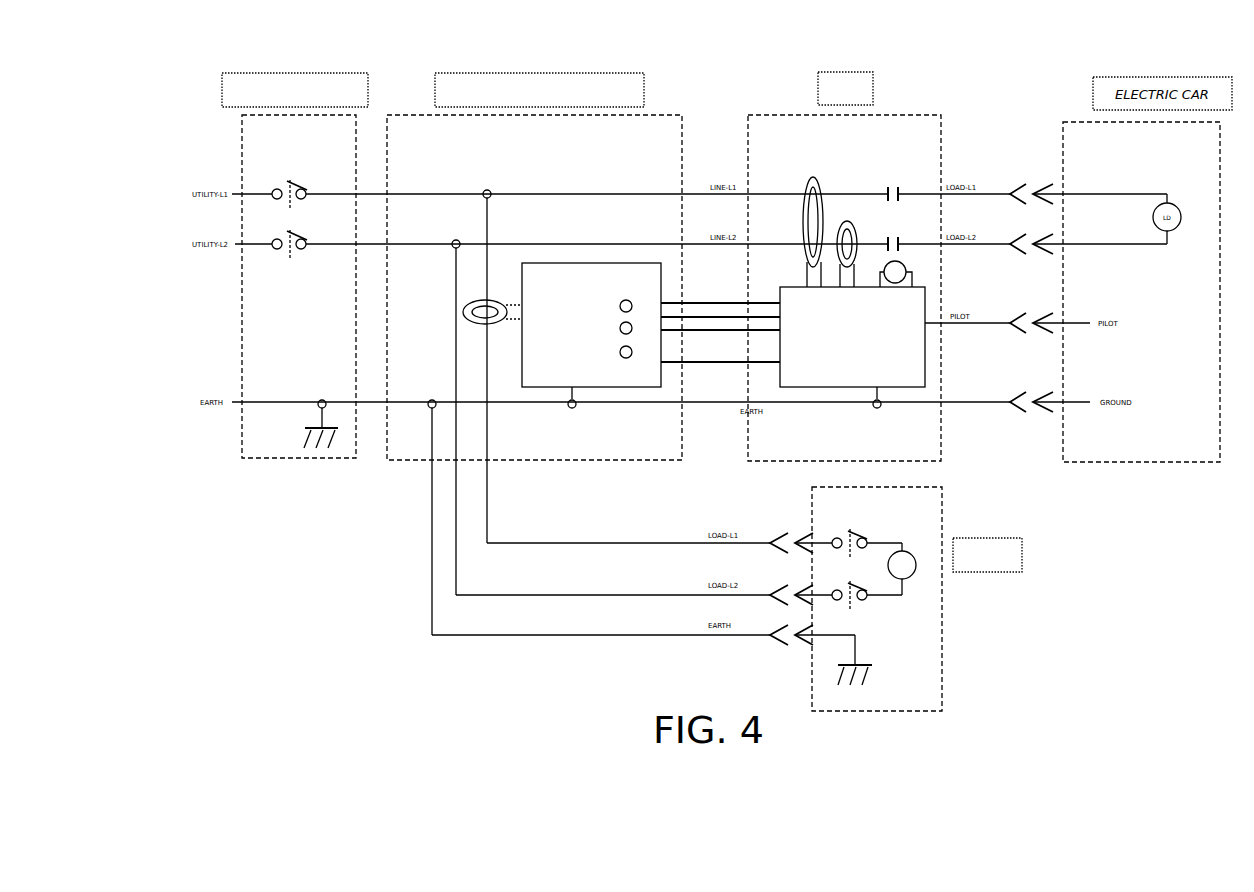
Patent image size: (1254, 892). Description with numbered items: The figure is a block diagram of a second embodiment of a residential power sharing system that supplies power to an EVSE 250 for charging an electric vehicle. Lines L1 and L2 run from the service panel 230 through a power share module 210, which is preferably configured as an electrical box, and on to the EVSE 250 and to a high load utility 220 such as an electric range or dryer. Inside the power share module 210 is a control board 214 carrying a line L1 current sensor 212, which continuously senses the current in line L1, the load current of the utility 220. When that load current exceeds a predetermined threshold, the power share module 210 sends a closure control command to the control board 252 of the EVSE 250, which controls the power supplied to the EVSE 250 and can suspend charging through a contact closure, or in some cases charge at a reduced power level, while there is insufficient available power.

The power share module 210 is at (583, 354).
The line L1 current sensor 212 is at (562, 323).
The control board 214 is at (618, 263).
The high load utility 220 is at (942, 603).
The service panel 230 is at (307, 460).
The EVSE 250 is at (900, 266).
The control board 252 is at (925, 350).